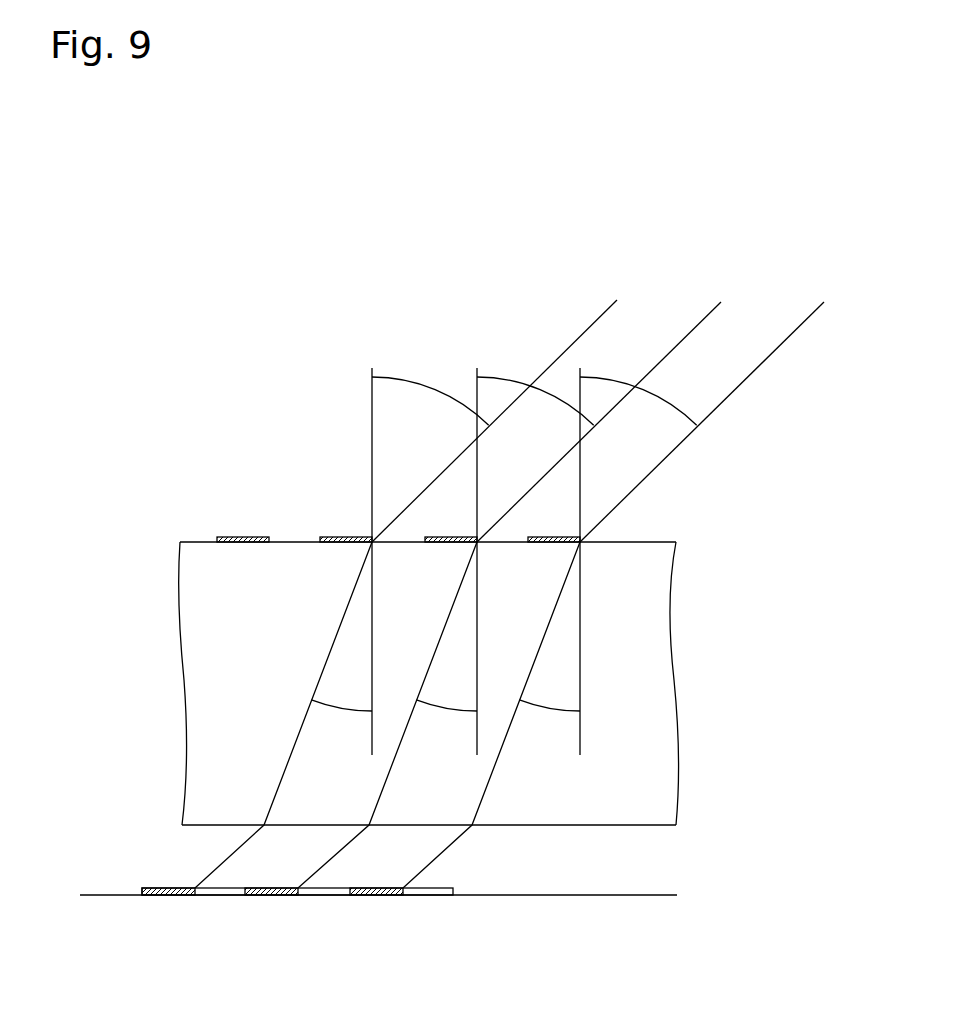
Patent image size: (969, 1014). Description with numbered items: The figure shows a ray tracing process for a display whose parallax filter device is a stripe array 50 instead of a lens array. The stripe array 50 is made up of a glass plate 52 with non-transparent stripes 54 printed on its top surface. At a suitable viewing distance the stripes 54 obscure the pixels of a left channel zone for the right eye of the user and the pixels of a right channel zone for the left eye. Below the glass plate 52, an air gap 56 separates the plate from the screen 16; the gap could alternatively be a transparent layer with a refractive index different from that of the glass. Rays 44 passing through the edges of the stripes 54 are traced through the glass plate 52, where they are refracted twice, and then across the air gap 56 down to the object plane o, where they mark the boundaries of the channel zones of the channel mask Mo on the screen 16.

The rays 44 is at (591, 323).
The stripe array 50 is at (257, 490).
The glass plate 52 is at (193, 620).
The non-transparent stripes 54 is at (223, 537).
The air gap 56 is at (667, 854).
The screen 16 is at (553, 895).
The channel mask Mo is at (152, 880).
The object plane O is at (398, 899).